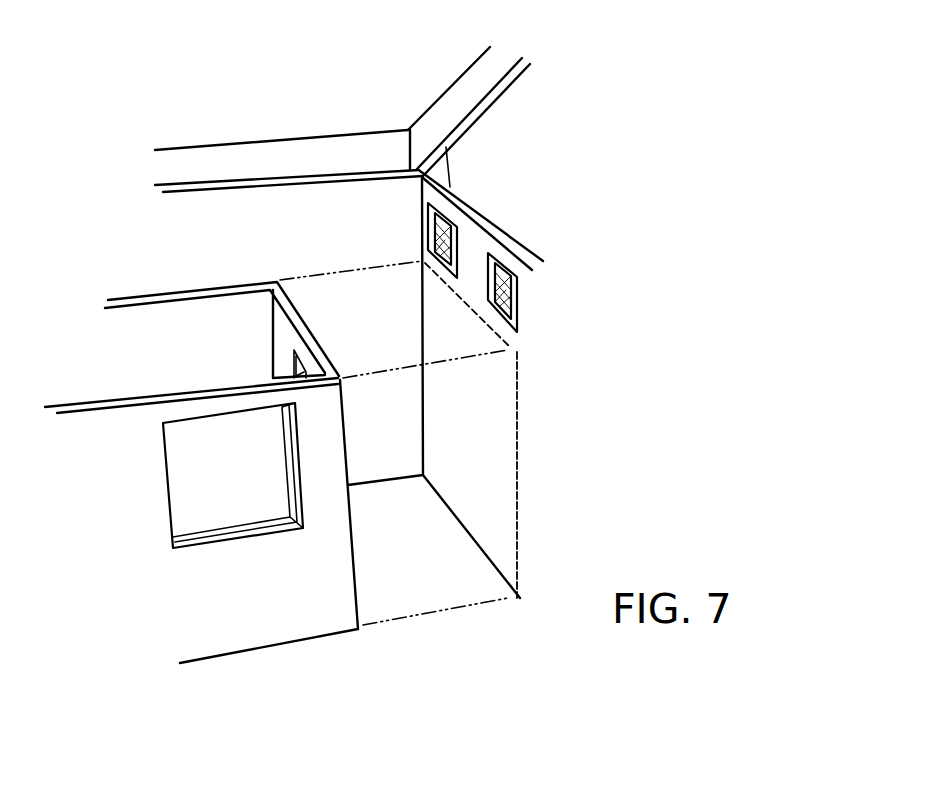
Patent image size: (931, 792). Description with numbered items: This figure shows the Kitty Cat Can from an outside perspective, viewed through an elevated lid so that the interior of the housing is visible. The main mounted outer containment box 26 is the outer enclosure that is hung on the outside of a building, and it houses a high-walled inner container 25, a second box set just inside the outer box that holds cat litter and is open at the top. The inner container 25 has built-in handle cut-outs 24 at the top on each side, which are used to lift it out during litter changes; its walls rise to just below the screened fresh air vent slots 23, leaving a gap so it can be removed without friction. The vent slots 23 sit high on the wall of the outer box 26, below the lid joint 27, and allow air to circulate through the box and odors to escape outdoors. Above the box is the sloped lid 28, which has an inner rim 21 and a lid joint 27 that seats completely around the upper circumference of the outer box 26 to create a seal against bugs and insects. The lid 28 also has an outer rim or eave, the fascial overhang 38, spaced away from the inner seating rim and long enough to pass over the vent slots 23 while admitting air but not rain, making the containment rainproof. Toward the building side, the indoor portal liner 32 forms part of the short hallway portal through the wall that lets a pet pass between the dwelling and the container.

The inner rim 21 is at (458, 77).
The screened fresh air vent slots 23 is at (503, 270).
The handle cut-outs 24 is at (297, 367).
The high-walled inner container 25 is at (220, 310).
The main mounted outer containment box 26 is at (270, 195).
The lid joint 27 is at (315, 173).
The sloped lid 28 is at (298, 117).
The indoor portal liner 32 is at (207, 543).
The fascial overhang 38 is at (500, 227).